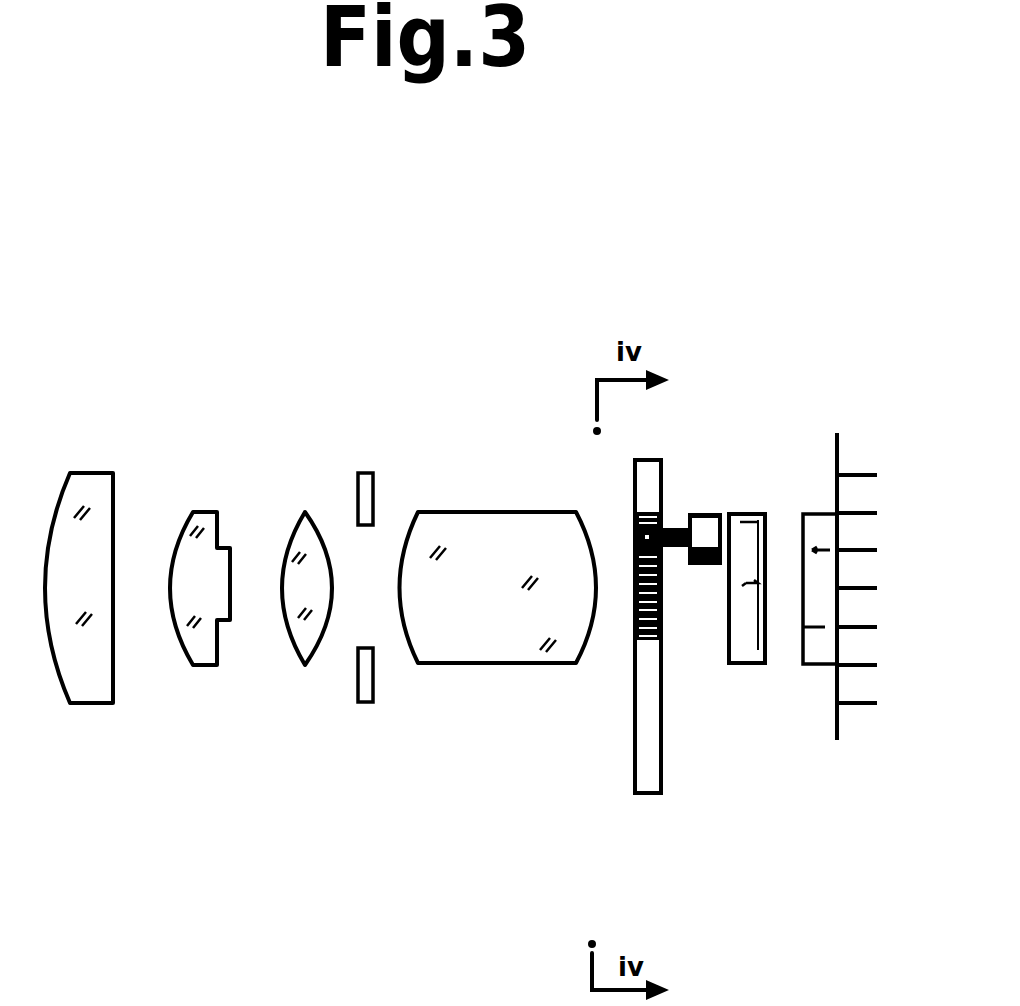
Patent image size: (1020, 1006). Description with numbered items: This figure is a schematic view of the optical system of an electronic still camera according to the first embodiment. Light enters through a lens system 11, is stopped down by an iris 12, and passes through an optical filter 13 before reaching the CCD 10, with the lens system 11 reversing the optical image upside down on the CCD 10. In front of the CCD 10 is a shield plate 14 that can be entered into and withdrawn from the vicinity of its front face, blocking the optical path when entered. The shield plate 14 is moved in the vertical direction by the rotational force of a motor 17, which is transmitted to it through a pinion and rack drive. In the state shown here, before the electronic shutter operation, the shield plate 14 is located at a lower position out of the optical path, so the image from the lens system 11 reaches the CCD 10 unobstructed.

The CCD 10 is at (818, 527).
The lens system 11 is at (290, 537).
The iris 12 is at (362, 473).
The optical filter 13 is at (743, 512).
The shield plate 14 is at (642, 780).
The motor 17 is at (702, 563).